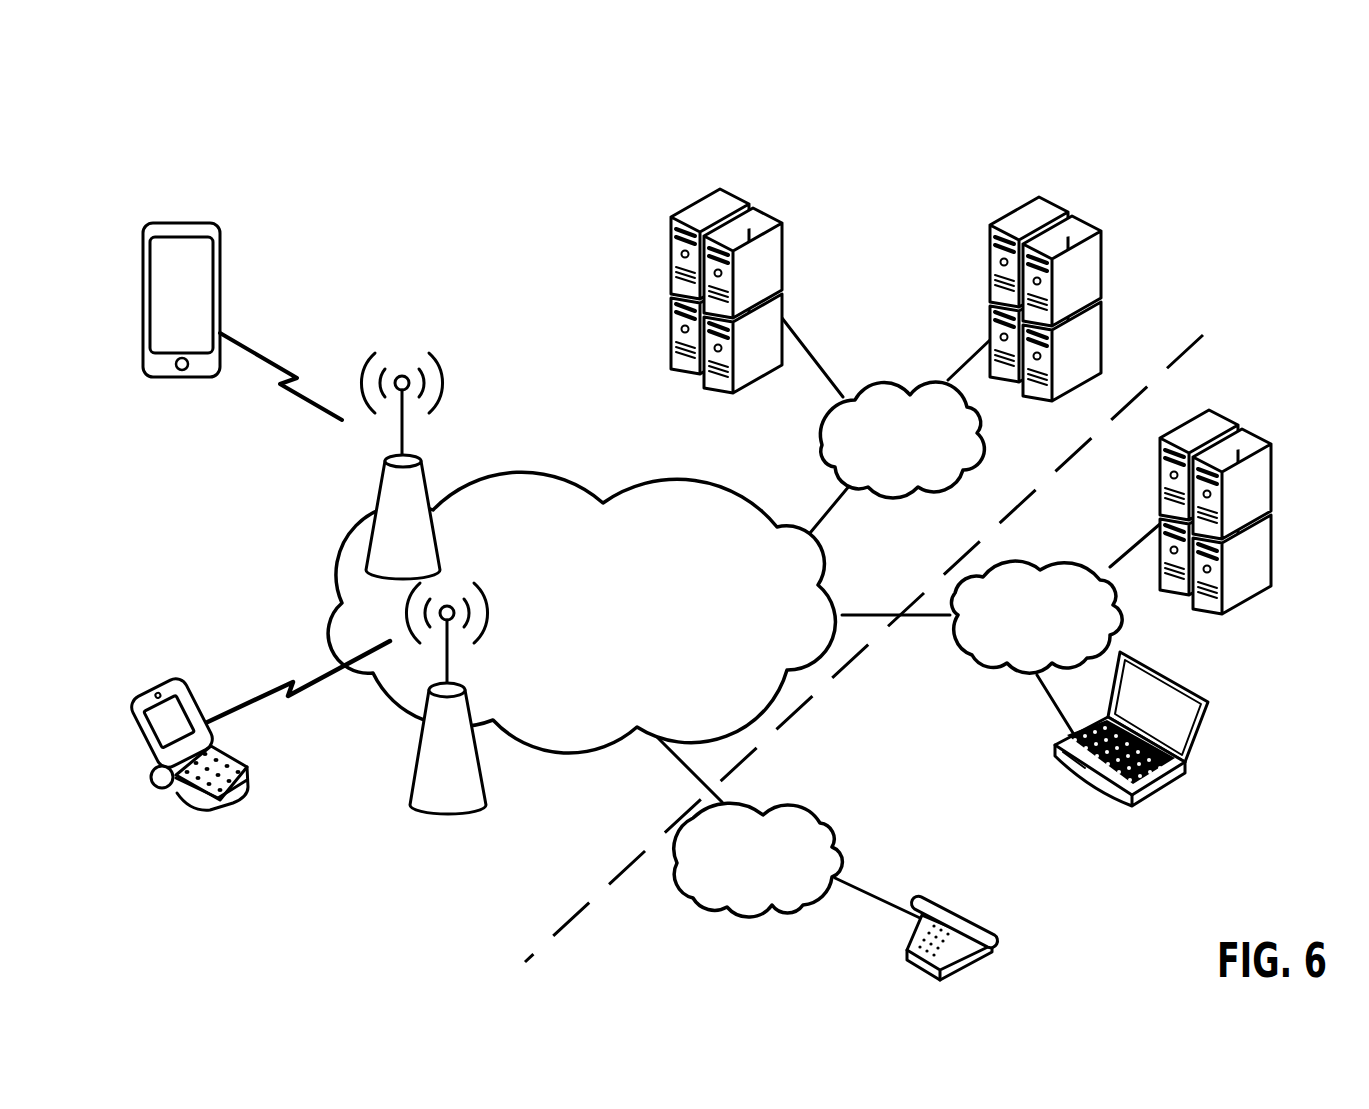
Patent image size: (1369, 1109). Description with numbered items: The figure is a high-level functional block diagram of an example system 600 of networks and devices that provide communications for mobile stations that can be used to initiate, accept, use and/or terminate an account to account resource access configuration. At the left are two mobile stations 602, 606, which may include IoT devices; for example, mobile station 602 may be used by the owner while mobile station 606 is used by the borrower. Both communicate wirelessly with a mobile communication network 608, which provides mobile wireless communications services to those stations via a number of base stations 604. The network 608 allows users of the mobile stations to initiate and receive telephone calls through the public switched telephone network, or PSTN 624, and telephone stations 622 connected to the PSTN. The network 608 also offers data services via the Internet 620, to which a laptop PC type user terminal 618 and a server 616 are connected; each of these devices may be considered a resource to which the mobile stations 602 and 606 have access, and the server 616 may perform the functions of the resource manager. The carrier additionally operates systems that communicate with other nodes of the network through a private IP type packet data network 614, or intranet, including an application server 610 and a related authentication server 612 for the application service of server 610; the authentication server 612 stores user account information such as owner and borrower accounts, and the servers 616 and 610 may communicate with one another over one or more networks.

The system 600 is at (297, 162).
The mobile station 602 is at (149, 240).
The base station 604 is at (383, 480).
The mobile station 606 is at (137, 700).
The mobile communication network 608 is at (540, 471).
The application server 610 is at (669, 220).
The authentication server 612 is at (990, 228).
The private IP type packet data network 614 is at (984, 440).
The server 616 is at (1272, 445).
The laptop PC type user terminal 618 is at (1209, 705).
The Internet 620 is at (975, 660).
The telephone station 622 is at (995, 925).
The public switched telephone network (PSTN) 624 is at (834, 830).